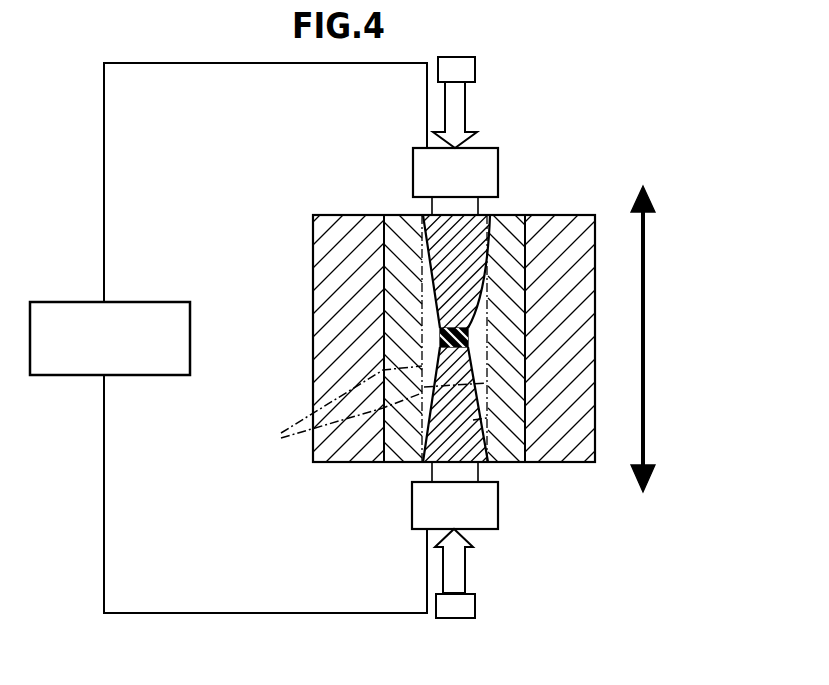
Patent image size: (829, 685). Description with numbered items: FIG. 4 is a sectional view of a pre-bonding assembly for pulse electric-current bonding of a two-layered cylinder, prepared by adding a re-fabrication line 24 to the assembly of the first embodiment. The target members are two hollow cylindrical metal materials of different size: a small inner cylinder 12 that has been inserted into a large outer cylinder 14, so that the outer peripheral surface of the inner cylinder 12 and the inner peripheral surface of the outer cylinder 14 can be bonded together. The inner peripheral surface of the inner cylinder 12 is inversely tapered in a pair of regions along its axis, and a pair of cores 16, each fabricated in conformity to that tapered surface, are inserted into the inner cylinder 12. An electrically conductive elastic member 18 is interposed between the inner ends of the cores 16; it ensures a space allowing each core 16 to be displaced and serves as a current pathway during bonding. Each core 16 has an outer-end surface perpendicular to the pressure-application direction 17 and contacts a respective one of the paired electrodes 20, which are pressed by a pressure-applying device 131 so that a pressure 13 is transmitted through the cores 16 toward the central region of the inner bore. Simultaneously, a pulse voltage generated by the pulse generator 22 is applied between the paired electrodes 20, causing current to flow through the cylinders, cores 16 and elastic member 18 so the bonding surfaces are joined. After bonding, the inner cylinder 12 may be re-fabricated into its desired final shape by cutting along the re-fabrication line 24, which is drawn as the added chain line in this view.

The inner cylinder 12 is at (402, 463).
The pressure 13 is at (467, 112).
The pressure-applying device 131 is at (475, 70).
The outer cylinder 14 is at (351, 222).
The core 16 is at (483, 420).
The pressure-application direction 17 is at (645, 343).
The elastic member 18 is at (482, 328).
The electrode 20 is at (413, 173).
The pulse generator 22 is at (162, 302).
The re-fabrication line 24 is at (367, 408).